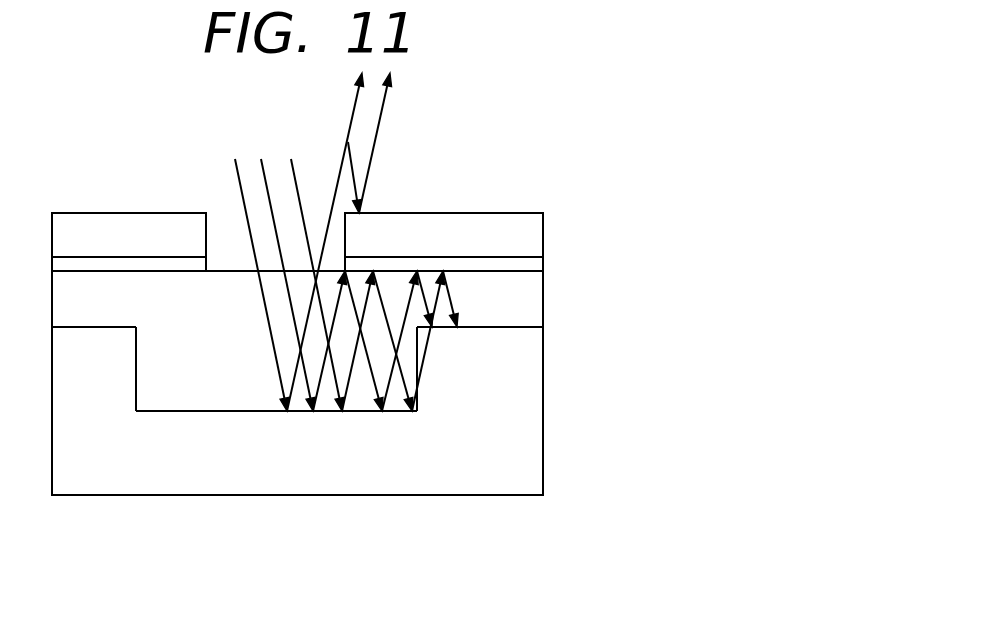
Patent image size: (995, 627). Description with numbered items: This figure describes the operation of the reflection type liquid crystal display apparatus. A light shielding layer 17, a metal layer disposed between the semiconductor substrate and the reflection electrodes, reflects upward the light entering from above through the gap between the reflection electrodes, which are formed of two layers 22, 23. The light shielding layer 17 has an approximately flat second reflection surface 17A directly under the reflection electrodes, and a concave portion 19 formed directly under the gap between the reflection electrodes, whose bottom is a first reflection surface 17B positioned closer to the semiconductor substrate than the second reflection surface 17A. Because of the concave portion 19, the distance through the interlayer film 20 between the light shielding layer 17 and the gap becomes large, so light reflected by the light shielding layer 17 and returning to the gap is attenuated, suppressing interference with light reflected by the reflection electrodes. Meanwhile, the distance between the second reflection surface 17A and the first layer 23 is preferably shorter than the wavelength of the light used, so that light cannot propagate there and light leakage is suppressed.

The light shielding layer 17 is at (530, 435).
The second reflection surface 17A is at (495, 328).
The first reflection surface 17B is at (251, 411).
The concave portion 19 is at (213, 370).
The interlayer film 20 is at (530, 305).
The reflection electrode layer 22 is at (530, 265).
The first layer of the reflection electrodes 23 is at (530, 227).